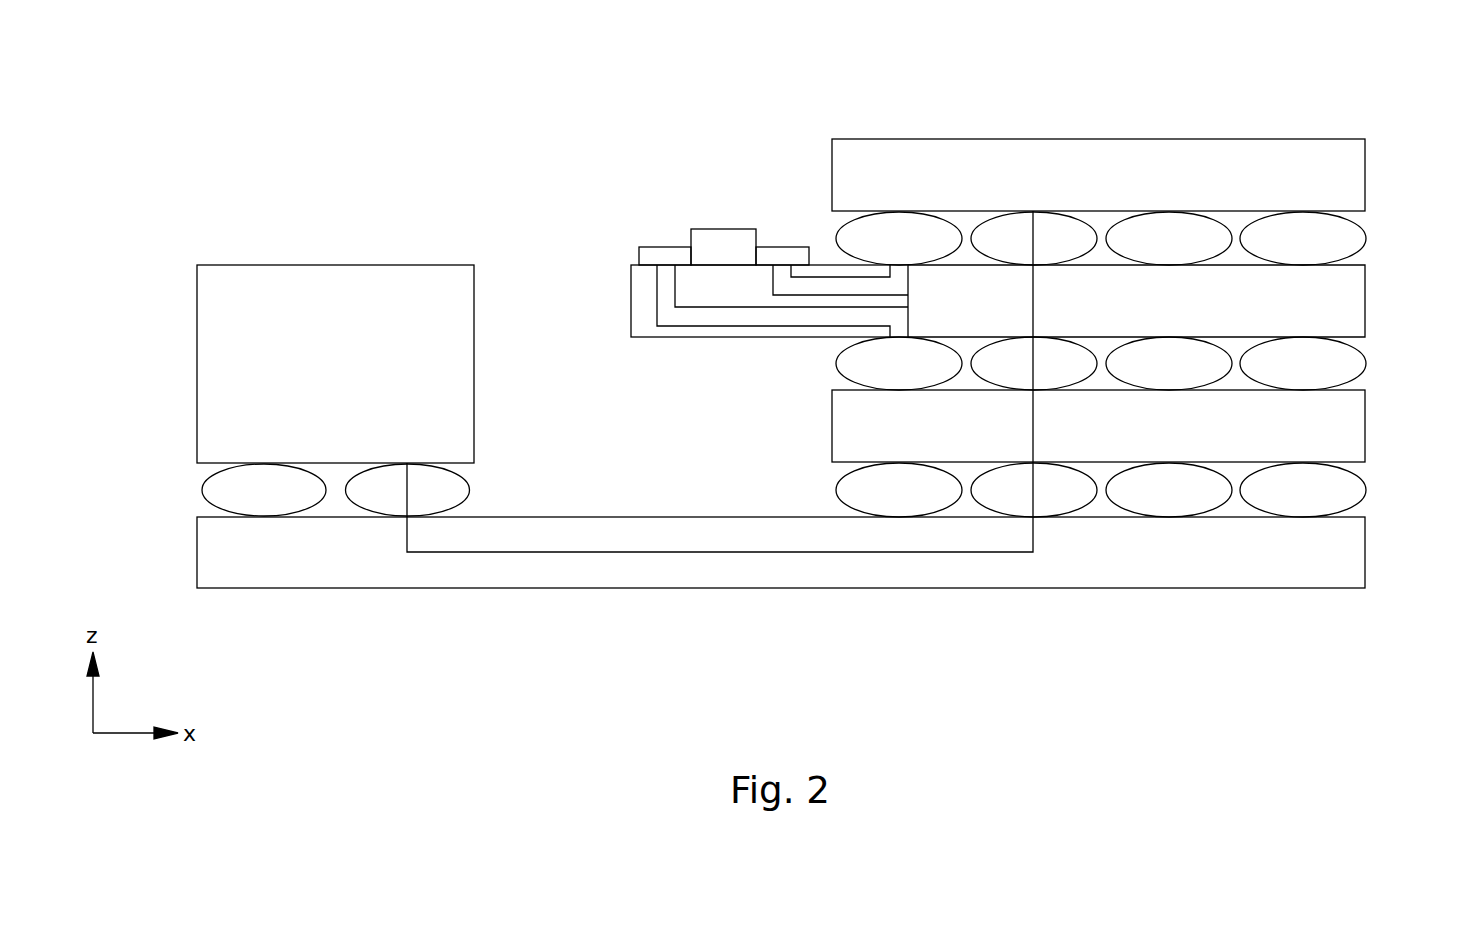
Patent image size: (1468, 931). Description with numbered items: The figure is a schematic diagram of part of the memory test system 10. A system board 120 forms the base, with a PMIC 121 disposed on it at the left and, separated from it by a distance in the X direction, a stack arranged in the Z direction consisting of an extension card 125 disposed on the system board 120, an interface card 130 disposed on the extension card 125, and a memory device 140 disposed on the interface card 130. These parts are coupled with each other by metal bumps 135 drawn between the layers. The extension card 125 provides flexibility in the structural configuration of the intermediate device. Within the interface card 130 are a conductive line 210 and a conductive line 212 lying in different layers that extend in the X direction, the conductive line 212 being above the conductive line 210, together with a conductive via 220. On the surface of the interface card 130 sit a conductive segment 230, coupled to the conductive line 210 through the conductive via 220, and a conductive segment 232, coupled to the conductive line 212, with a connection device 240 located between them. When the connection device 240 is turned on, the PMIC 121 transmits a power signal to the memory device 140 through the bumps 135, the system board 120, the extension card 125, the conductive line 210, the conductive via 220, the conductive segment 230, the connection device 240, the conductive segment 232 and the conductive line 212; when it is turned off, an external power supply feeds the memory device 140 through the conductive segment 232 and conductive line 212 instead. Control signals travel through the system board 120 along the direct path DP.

The memory test system 10 is at (187, 83).
The system board 120 is at (1358, 537).
The PMIC 121 is at (359, 380).
The extension card 125 is at (1358, 415).
The interface card 130 is at (1358, 297).
The bumps 135 is at (1358, 227).
The memory device 140 is at (1358, 182).
The conductive line 210 is at (712, 326).
The conductive line 212 is at (805, 288).
The conductive via 220 is at (655, 280).
The conductive segment 230 is at (663, 253).
The conductive segment 232 is at (783, 253).
The connection device 240 is at (720, 237).
The direct path DP is at (1033, 527).